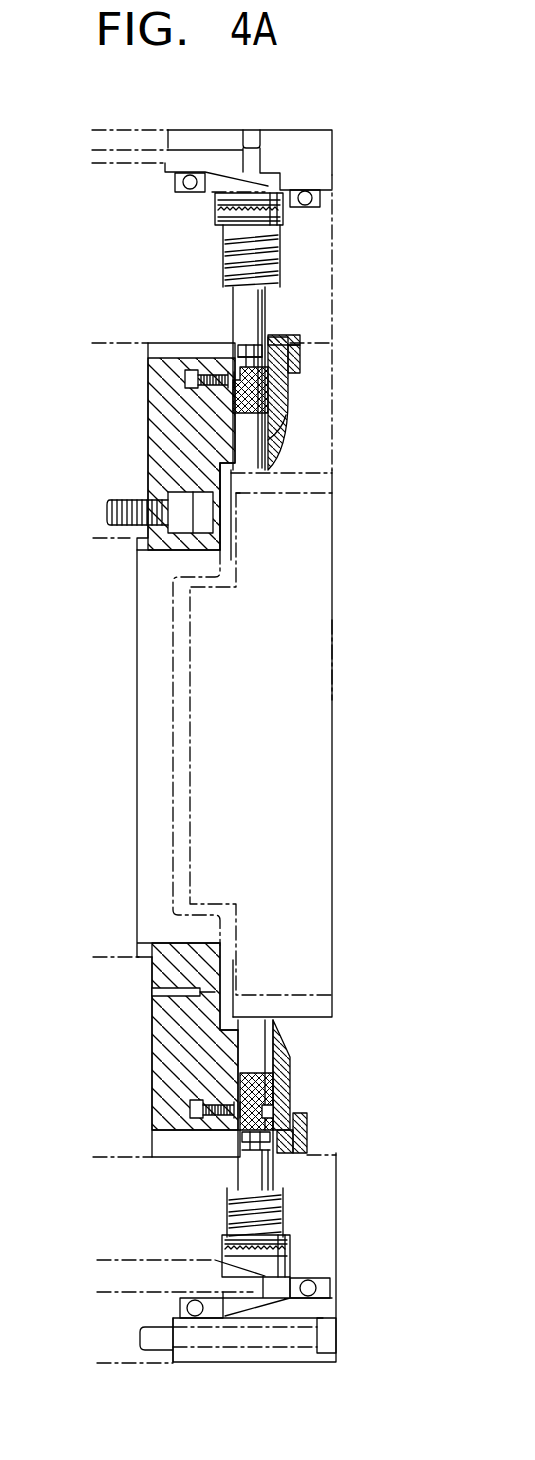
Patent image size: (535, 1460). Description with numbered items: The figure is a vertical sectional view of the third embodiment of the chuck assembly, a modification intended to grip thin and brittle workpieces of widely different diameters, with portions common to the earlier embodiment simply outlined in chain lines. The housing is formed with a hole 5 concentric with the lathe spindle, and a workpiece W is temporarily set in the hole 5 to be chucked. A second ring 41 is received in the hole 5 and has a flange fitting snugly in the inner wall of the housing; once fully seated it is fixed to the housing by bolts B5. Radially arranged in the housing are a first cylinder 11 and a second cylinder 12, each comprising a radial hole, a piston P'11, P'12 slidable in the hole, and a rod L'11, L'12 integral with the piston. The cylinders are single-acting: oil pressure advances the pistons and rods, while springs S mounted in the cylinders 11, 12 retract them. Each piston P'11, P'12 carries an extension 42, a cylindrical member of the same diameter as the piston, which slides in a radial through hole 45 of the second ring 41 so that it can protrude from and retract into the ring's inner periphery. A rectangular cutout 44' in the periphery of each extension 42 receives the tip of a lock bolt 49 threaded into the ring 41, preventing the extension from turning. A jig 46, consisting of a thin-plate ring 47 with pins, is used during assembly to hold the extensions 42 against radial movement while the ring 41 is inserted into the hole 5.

The hole 5 is at (333, 336).
The first cylinder 11 is at (293, 1266).
The second cylinder 12 is at (283, 257).
The second ring 41 is at (282, 418).
The extension 42 is at (276, 440).
The cutout 44' is at (210, 750).
The radial through hole 45 is at (233, 450).
The jig 46 is at (300, 367).
The ring 47 is at (300, 341).
The lock bolt 49 is at (185, 378).
The bolt B5 is at (108, 508).
The spring S is at (282, 247).
The workpiece W is at (305, 657).
The piston P'12 is at (312, 183).
The piston P'11 is at (316, 1251).
The rod L'12 is at (321, 375).
The rod L'11 is at (323, 1114).